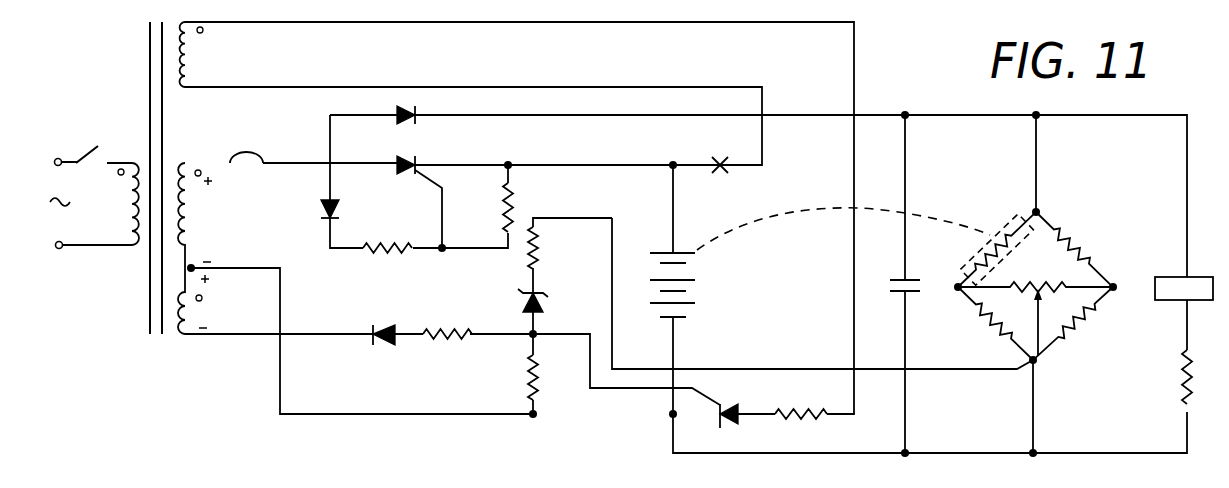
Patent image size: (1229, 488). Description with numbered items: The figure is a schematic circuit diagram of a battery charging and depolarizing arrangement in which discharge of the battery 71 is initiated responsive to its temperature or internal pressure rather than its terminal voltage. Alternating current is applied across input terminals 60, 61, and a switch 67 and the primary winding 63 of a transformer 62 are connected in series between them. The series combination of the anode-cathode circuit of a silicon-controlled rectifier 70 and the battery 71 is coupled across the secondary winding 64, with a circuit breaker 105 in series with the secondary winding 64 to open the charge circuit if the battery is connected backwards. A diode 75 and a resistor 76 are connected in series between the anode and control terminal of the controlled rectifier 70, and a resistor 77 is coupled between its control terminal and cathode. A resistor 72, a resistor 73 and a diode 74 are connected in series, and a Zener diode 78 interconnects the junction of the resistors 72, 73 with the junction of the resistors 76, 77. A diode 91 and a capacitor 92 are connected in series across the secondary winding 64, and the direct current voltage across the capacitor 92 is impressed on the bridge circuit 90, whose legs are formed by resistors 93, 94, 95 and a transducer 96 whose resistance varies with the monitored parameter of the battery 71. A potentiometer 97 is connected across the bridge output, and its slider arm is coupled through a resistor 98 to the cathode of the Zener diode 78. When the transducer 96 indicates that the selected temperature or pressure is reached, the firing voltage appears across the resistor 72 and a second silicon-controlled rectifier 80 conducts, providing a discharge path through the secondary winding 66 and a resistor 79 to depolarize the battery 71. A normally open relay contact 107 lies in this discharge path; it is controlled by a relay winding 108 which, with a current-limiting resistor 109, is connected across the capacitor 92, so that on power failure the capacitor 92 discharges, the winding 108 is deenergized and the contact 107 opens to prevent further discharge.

The input terminal 60 is at (58, 158).
The input terminal 61 is at (58, 249).
The transformer 62 is at (143, 157).
The primary winding 63 is at (128, 208).
The secondary winding 64 is at (192, 203).
The secondary winding 66 is at (190, 70).
The switch 67 is at (88, 147).
The silicon-controlled rectifier 70 is at (403, 173).
The battery 71 is at (692, 302).
The resistor 72 is at (527, 380).
The resistor 73 is at (458, 307).
The diode 74 is at (388, 345).
The diode 75 is at (320, 207).
The resistor 76 is at (403, 222).
The resistor 77 is at (513, 200).
The Zener diode 78 is at (522, 307).
The resistor 79 is at (808, 422).
The silicon-controlled rectifier 80 is at (733, 410).
The bridge circuit 90 is at (1043, 271).
The diode 91 is at (395, 103).
The capacitor 92 is at (902, 280).
The resistor 93 is at (1091, 214).
The resistor 94 is at (1072, 333).
The resistor 95 is at (1002, 338).
The transducer 96 is at (1010, 217).
The potentiometer 97 is at (1015, 282).
The resistor 98 is at (540, 252).
The circuit breaker 105 is at (280, 128).
The relay contact 107 is at (743, 140).
The relay winding 108 is at (1170, 275).
The current-limiting resistor 109 is at (1180, 398).